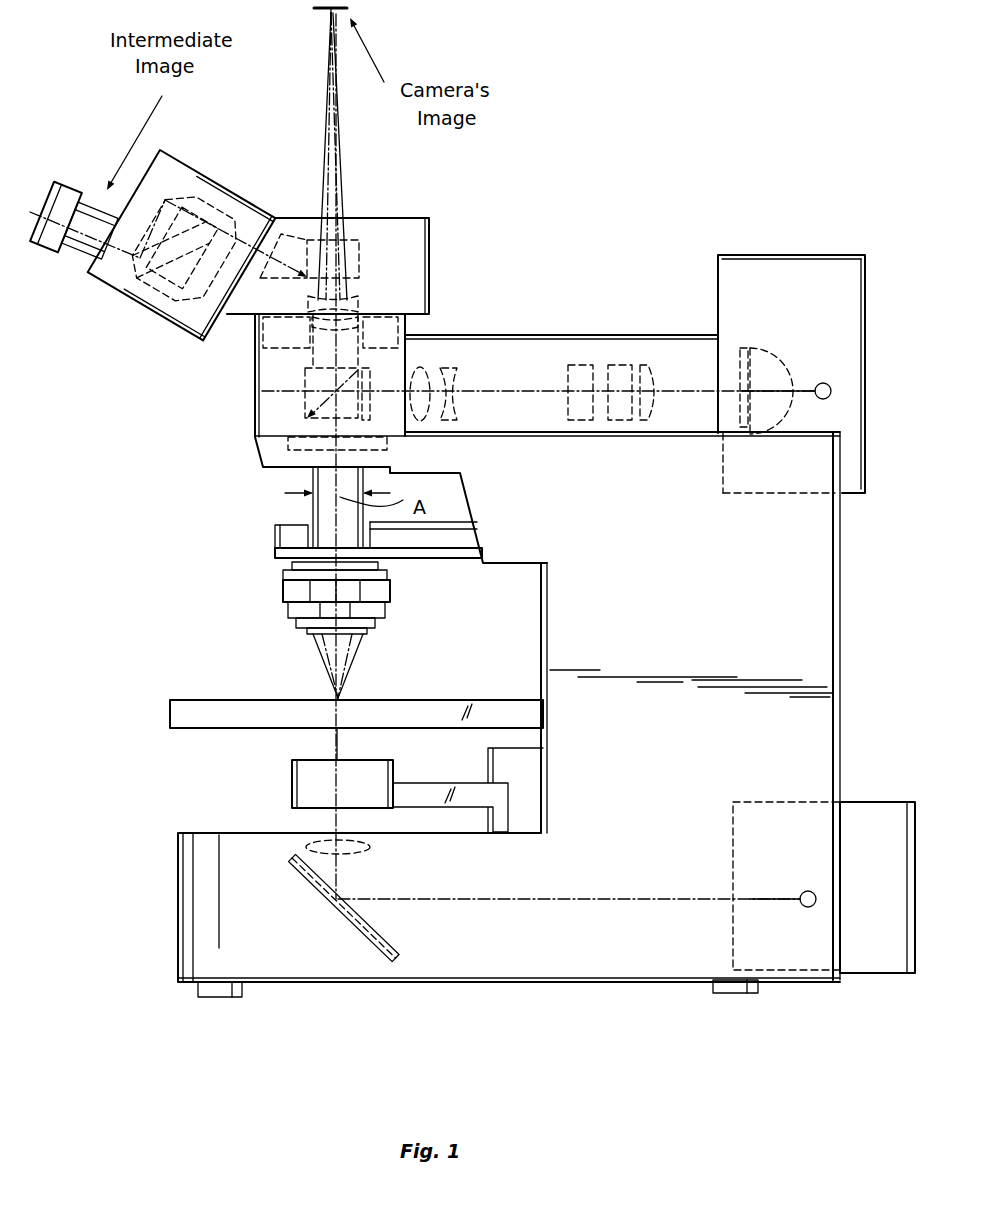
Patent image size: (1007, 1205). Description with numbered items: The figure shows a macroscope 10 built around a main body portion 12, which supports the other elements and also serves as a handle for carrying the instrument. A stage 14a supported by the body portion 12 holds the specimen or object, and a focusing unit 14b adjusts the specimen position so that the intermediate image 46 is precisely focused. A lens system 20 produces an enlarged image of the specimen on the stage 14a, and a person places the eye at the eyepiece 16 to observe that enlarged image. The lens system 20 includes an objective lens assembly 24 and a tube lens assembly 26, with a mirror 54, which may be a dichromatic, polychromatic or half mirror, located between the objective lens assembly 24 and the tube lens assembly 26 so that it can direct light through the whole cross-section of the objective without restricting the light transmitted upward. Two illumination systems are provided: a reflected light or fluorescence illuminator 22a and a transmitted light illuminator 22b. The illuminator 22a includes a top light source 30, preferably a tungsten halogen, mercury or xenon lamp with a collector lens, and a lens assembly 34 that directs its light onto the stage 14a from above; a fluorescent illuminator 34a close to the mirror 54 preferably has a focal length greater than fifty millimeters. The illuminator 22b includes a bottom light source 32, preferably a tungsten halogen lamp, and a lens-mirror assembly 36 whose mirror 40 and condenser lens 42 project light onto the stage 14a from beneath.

The macroscope 10 is at (642, 102).
The main body portion 12 is at (786, 615).
The stage 14a is at (170, 722).
The focusing unit 14b is at (275, 540).
The eyepiece 16 is at (44, 253).
The lens system 20 is at (317, 390).
The reflected light illuminator 22a is at (622, 356).
The transmitted light illuminator 22b is at (509, 937).
The objective lens assembly 24 is at (377, 630).
The tube lens assembly 26 is at (356, 274).
The top light source 30 is at (822, 382).
The bottom light source 32 is at (805, 890).
The lens assembly 34 is at (611, 433).
The fluorescent illuminator 34a is at (471, 356).
The lens-mirror assembly 36 is at (299, 906).
The mirror 40 is at (361, 930).
The condenser lens 42 is at (300, 783).
The intermediate image 46 is at (309, 154).
The mirror 54 is at (300, 383).